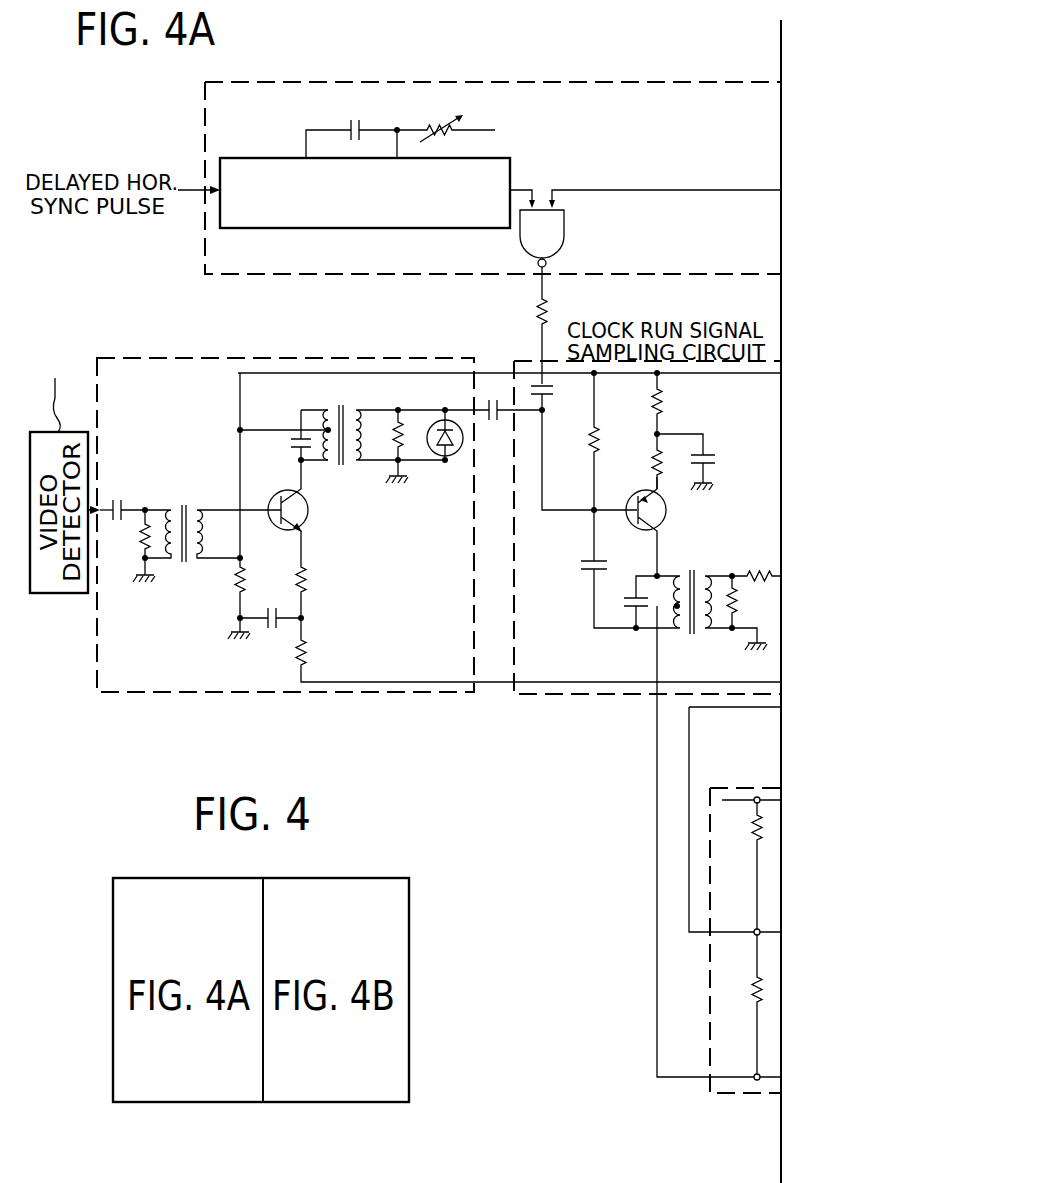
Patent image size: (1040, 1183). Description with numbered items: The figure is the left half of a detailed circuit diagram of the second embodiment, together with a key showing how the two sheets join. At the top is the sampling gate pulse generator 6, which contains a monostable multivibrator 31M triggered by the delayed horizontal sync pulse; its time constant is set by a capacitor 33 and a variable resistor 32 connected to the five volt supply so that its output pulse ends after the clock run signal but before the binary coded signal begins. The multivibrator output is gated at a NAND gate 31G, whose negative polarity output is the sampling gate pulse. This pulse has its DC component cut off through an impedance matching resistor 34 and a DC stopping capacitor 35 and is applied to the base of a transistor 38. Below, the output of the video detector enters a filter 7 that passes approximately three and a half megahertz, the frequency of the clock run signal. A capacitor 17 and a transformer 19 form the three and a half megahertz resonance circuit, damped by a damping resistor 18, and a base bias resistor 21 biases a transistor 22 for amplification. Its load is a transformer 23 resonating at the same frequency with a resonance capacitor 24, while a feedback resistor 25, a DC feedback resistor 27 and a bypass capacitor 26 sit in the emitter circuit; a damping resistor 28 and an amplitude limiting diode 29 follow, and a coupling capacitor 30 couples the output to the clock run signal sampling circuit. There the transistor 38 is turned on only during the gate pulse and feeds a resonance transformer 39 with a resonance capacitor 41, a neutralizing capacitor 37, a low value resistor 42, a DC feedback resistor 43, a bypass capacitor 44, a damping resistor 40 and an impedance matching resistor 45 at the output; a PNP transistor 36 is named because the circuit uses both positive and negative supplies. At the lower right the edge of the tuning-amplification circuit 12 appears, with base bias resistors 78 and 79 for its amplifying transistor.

The sampling gate pulse generator 6 is at (688, 106).
The filter 7 is at (220, 376).
The tuning-amplification circuit 12 is at (730, 1032).
The capacitor 17 is at (117, 494).
The damping resistor 18 is at (140, 548).
The transformer 19 is at (183, 568).
The base bias resistor 21 is at (248, 579).
The transistor 22 is at (311, 518).
The transformer 23 is at (343, 466).
The resonance capacitor 24 is at (288, 444).
The feedback resistor 25 is at (312, 578).
The bypass capacitor 26 is at (272, 632).
The DC feedback resistor 27 is at (312, 652).
The damping resistor 28 is at (394, 422).
The diode 29 is at (455, 458).
The coupling capacitor 30 is at (494, 428).
The monostable multivibrator 31M is at (381, 230).
The NAND gate 31G is at (645, 243).
The variable resistor 32 is at (430, 122).
The capacitor 33 is at (356, 120).
The impedance matching resistor 34 is at (533, 312).
The DC stopping capacitor 35 is at (555, 392).
The PNP transistor 36 is at (590, 446).
The neutralizing capacitor 37 is at (585, 567).
The transistor 38 is at (666, 512).
The resonance transformer 39 is at (692, 640).
The damping resistor 40 is at (728, 588).
The resonance capacitor 41 is at (621, 594).
The resistor 42 is at (652, 462).
The DC feedback resistor 43 is at (660, 400).
The bypass capacitor 44 is at (719, 468).
The impedance matching resistor 45 is at (753, 572).
The base bias resistor 78 is at (748, 835).
The base bias resistor 79 is at (750, 990).